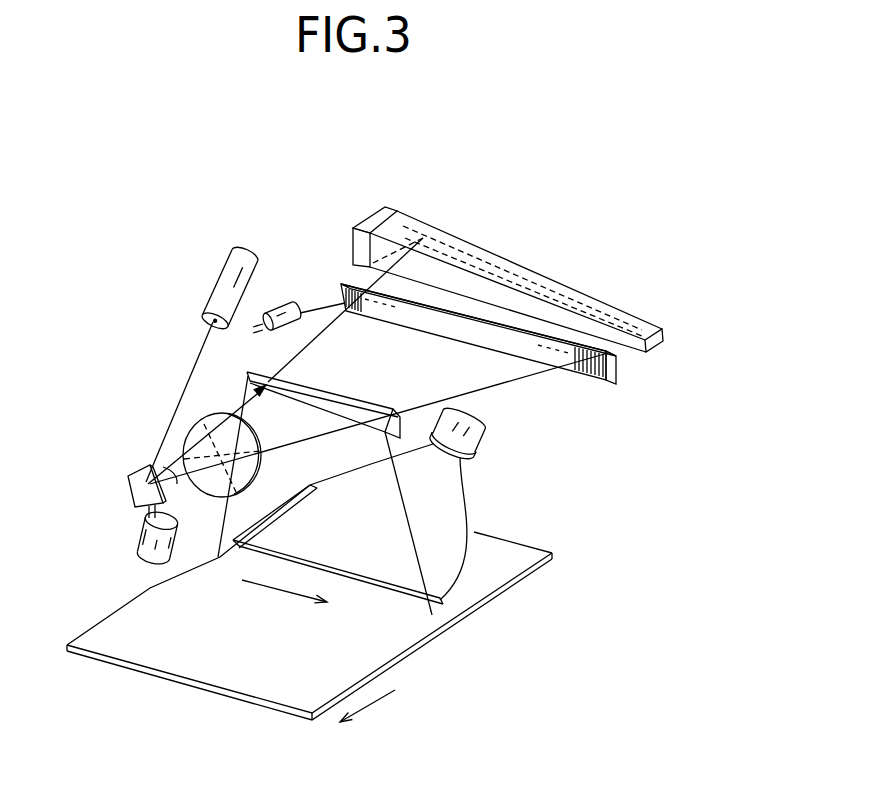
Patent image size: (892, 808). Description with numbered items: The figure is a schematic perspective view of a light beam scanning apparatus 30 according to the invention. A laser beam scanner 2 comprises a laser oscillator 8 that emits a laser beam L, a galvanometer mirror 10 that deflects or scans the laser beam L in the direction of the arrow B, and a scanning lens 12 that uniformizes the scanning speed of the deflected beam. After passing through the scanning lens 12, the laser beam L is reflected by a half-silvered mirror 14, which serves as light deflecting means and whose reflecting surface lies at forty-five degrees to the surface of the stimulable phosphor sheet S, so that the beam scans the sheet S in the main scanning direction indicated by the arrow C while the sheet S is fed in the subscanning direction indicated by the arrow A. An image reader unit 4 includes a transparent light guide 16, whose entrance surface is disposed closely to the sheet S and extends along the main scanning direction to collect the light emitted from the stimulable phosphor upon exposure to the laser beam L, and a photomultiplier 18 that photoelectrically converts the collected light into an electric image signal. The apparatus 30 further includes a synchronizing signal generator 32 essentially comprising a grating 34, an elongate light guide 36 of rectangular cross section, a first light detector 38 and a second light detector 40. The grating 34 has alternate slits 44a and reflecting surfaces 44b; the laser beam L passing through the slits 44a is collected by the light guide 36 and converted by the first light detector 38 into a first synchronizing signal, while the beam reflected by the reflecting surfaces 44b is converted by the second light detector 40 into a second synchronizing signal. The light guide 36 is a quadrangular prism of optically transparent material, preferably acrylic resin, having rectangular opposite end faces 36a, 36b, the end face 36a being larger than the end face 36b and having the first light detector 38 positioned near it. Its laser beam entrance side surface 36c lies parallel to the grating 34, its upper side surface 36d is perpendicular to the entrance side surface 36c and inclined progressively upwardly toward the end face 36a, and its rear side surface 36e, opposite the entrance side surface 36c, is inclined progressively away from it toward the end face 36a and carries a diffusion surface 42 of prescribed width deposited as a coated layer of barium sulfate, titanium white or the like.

The laser beam scanner 2 is at (125, 374).
The light beam scanning apparatus 30 is at (238, 191).
The laser oscillator 8 is at (228, 273).
The laser beam L is at (193, 360).
The galvanometer mirror 10 is at (137, 487).
The scanning direction of galvanometer mirror B is at (378, 375).
The scanning lens 12 is at (203, 430).
The second light detector 40 is at (280, 315).
The half-silvered mirror 14 is at (330, 400).
The synchronizing signal generator 32 is at (481, 193).
The first light detector 38 is at (373, 220).
The elongate light guide 36 is at (543, 261).
The end face 36a is at (387, 232).
The rear side surface 36e is at (442, 238).
The upper side surface 36d is at (467, 245).
The laser beam entrance side surface 36c is at (448, 282).
The diffusion surface 42 is at (617, 302).
The end face 36b is at (662, 342).
The grating 34 is at (460, 327).
The slits 44a is at (602, 373).
The reflecting surfaces 44b is at (615, 373).
The image reader unit 4 is at (517, 505).
The photomultiplier 18 is at (467, 432).
The transparent light guide 16 is at (450, 553).
The stimulable phosphor sheet S is at (173, 655).
The main scanning direction C is at (293, 602).
The subscanning direction A is at (357, 721).